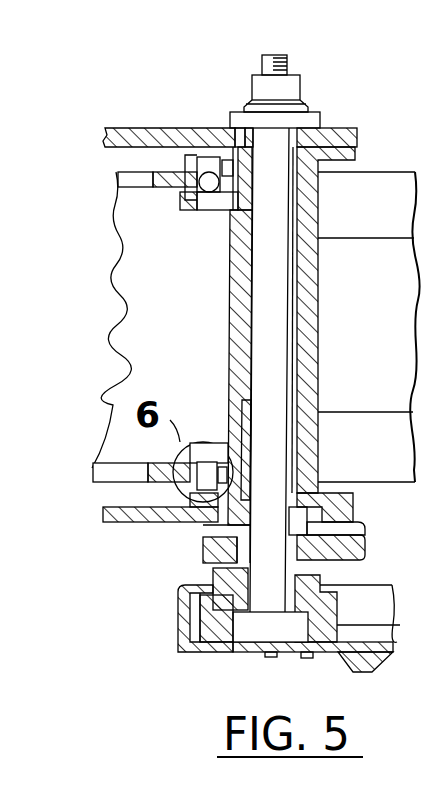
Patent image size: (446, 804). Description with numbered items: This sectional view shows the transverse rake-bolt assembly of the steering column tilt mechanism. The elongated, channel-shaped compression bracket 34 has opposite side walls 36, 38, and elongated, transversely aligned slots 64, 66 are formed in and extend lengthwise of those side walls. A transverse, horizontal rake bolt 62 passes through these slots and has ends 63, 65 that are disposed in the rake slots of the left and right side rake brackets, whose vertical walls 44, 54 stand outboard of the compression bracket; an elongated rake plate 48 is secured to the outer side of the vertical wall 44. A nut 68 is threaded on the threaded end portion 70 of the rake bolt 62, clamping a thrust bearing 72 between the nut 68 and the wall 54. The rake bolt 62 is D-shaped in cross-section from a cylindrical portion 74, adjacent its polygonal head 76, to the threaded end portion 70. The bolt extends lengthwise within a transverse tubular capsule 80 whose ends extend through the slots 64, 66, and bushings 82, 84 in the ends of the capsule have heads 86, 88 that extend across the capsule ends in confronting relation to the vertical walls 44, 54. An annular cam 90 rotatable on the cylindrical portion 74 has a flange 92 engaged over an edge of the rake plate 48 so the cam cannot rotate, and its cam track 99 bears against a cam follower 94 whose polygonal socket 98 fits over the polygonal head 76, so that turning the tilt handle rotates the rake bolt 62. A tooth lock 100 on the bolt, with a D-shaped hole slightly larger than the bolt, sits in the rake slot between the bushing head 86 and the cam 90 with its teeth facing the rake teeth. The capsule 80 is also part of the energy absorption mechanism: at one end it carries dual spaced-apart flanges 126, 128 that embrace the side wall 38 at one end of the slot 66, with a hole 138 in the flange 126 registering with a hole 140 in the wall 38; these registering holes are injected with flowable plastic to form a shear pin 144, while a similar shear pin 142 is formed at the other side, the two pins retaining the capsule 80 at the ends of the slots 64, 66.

The compression bracket 34 is at (119, 282).
The side wall 36 is at (153, 463).
The side wall 38 is at (130, 152).
The vertical wall 44 is at (118, 502).
The rake plate 48 is at (203, 526).
The vertical wall 54 is at (128, 130).
The rake bolt 62 is at (273, 322).
The end of rake bolt 63 is at (265, 503).
The slot 64 is at (100, 470).
The end of rake bolt 65 is at (280, 197).
The slot 66 is at (118, 182).
The nut 68 is at (293, 87).
The threaded end portion 70 is at (277, 56).
The thrust bearing 72 is at (322, 118).
The cylindrical portion 74 is at (288, 603).
The polygonal head 76 is at (272, 633).
The tubular capsule 80 is at (322, 278).
The bushing 82 is at (317, 423).
The bushing 84 is at (302, 188).
The bushing head 86 is at (353, 499).
The bushing head 88 is at (356, 146).
The annular cam 90 is at (365, 553).
The flange 92 is at (367, 536).
The cam follower 94 is at (400, 625).
The polygonal socket 98 is at (200, 580).
The cam track 99 is at (220, 563).
The tooth lock 100 is at (317, 510).
The flange 126 is at (185, 152).
The flange 128 is at (118, 216).
The hole 138 is at (208, 160).
The hole 140 is at (193, 200).
The shear pin 142 is at (200, 443).
The shear pin 144 is at (204, 212).